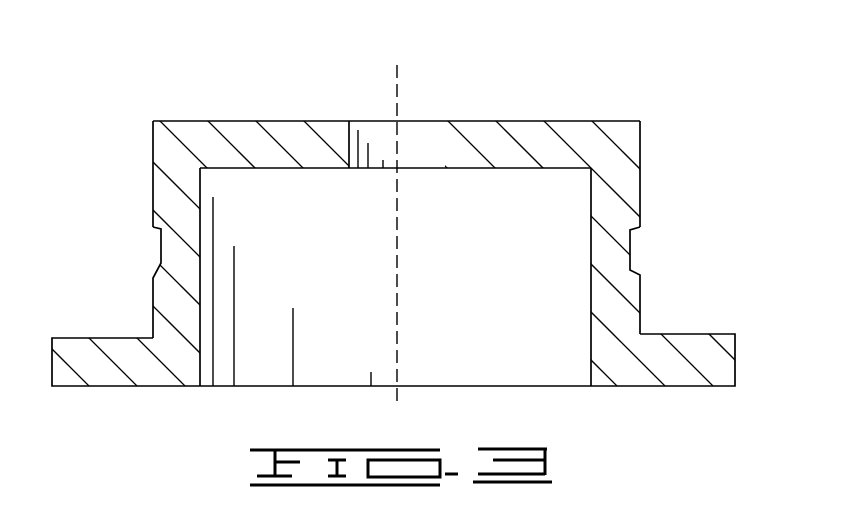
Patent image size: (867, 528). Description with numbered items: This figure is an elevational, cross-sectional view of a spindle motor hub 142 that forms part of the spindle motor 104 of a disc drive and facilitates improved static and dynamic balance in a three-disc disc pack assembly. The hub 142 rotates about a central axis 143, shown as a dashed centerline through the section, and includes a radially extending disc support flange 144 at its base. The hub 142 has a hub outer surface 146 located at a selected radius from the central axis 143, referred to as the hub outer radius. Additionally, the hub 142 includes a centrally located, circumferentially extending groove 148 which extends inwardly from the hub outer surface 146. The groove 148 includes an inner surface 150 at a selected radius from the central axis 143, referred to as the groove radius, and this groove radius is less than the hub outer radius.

The spindle motor 104 is at (565, 85).
The spindle motor hub 142 is at (293, 130).
The central axis 143 is at (397, 278).
The disc support flange 144 is at (120, 387).
The hub outer surface 146 is at (153, 167).
The groove 148 is at (157, 252).
The inner surface 150 is at (631, 243).